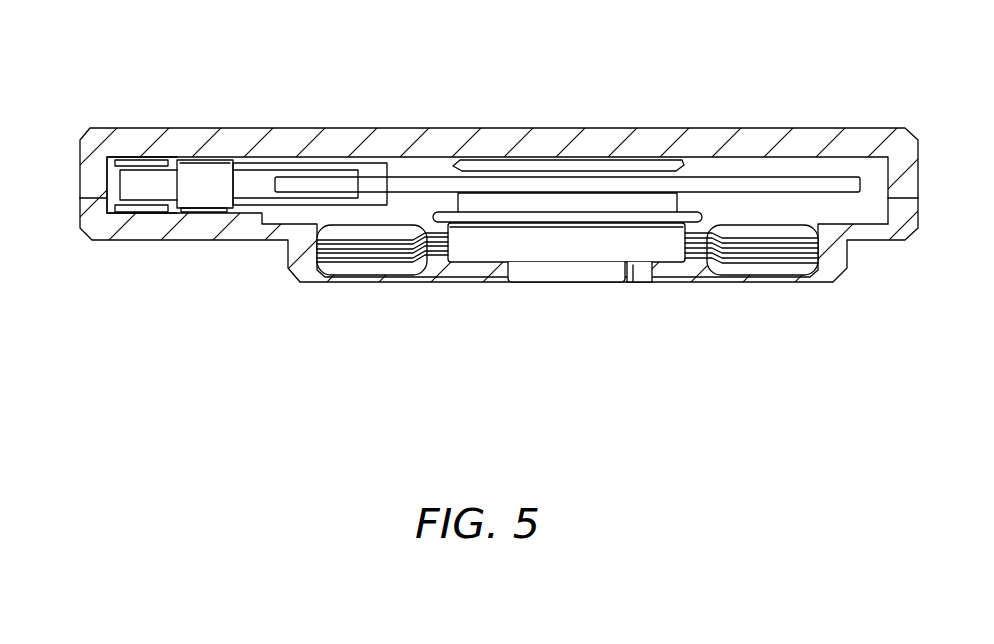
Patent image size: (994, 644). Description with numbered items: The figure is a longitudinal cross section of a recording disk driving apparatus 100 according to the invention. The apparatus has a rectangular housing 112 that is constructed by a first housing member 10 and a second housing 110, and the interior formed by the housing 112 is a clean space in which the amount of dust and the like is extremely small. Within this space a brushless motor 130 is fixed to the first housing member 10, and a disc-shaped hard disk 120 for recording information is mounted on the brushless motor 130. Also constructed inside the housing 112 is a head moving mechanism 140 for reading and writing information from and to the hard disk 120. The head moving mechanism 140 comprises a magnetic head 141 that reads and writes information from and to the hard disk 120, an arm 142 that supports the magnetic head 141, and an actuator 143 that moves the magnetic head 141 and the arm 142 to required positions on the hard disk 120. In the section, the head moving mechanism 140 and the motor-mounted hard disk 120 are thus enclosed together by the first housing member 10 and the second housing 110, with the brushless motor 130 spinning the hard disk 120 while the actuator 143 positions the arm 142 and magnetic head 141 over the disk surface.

The first housing member 10 is at (148, 231).
The recording disk driving apparatus 100 is at (278, 113).
The second housing 110 is at (48, 295).
The housing 112 is at (83, 337).
The hard disk 120 is at (730, 183).
The brushless motor 130 is at (570, 243).
The head moving mechanism 140 is at (278, 214).
The magnetic head 141 is at (396, 177).
The arm 142 is at (333, 164).
The actuator 143 is at (202, 178).